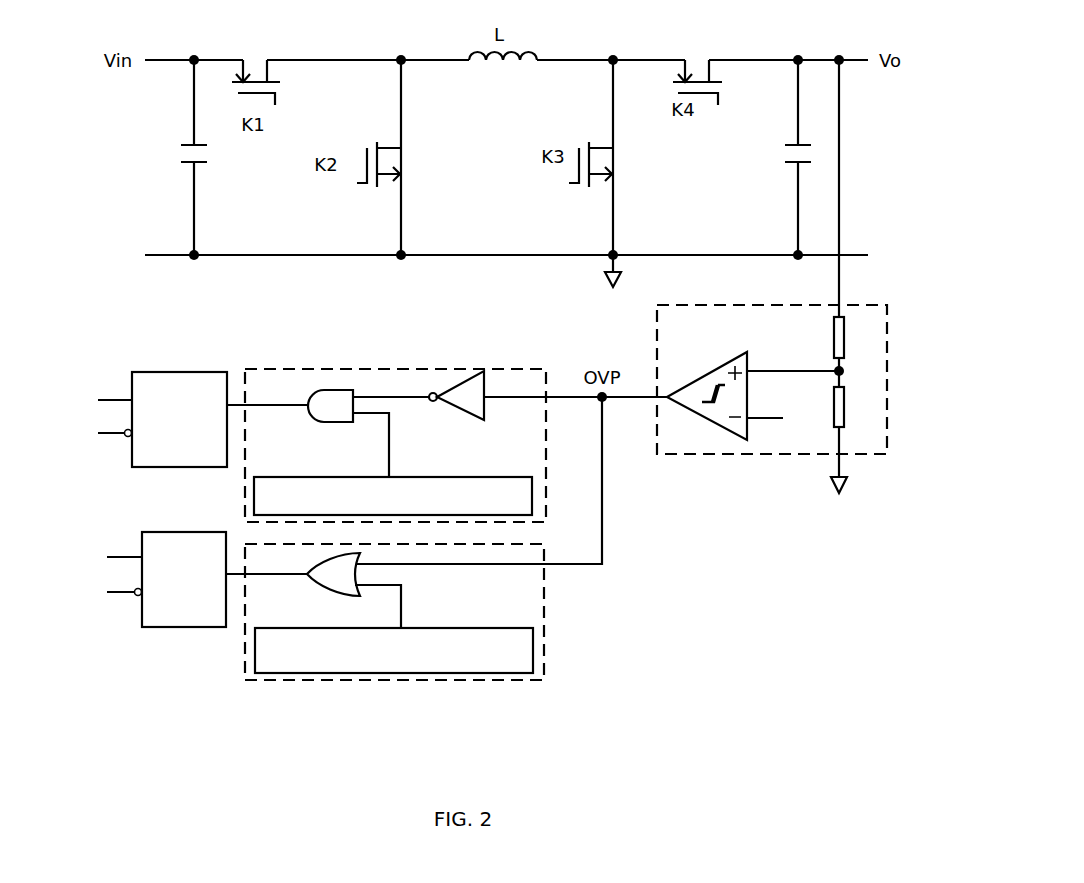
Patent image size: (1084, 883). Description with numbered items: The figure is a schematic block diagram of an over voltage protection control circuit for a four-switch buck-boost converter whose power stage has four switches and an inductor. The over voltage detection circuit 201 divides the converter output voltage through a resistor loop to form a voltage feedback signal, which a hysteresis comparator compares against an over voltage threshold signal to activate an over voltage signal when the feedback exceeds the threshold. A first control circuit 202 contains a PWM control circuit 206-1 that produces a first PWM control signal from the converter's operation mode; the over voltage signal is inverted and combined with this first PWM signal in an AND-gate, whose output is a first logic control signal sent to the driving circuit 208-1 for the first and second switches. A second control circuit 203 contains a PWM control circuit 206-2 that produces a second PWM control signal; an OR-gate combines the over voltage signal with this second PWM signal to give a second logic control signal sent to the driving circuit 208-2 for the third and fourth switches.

The over voltage detection circuit 201 is at (887, 408).
The control circuit 202 is at (386, 423).
The control circuit 203 is at (412, 616).
The PWM control circuit 206-1 is at (393, 496).
The PWM control circuit 206-2 is at (545, 648).
The driving circuit 208-1 is at (148, 419).
The driving circuit 208-2 is at (152, 579).